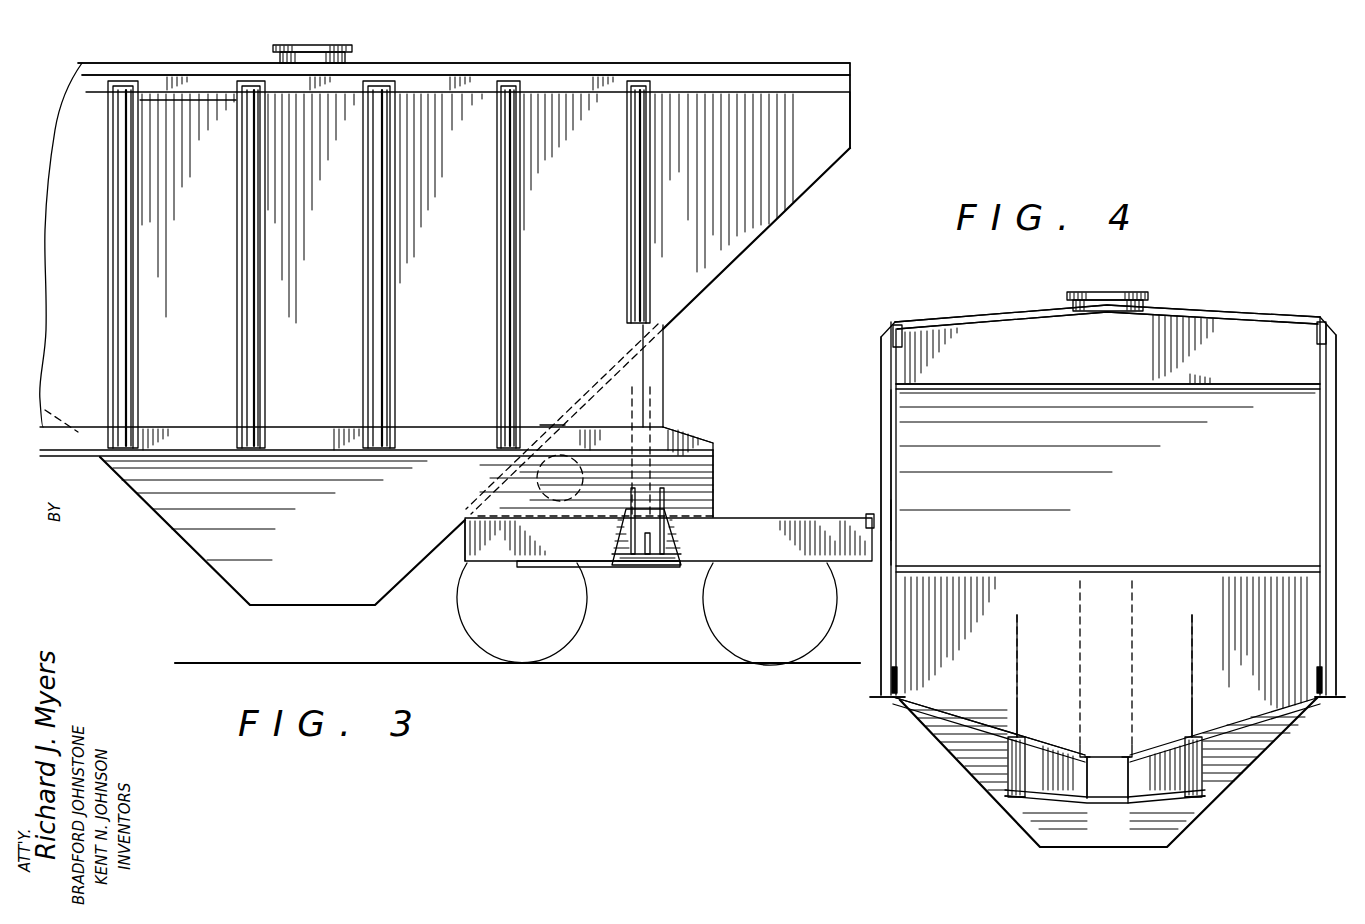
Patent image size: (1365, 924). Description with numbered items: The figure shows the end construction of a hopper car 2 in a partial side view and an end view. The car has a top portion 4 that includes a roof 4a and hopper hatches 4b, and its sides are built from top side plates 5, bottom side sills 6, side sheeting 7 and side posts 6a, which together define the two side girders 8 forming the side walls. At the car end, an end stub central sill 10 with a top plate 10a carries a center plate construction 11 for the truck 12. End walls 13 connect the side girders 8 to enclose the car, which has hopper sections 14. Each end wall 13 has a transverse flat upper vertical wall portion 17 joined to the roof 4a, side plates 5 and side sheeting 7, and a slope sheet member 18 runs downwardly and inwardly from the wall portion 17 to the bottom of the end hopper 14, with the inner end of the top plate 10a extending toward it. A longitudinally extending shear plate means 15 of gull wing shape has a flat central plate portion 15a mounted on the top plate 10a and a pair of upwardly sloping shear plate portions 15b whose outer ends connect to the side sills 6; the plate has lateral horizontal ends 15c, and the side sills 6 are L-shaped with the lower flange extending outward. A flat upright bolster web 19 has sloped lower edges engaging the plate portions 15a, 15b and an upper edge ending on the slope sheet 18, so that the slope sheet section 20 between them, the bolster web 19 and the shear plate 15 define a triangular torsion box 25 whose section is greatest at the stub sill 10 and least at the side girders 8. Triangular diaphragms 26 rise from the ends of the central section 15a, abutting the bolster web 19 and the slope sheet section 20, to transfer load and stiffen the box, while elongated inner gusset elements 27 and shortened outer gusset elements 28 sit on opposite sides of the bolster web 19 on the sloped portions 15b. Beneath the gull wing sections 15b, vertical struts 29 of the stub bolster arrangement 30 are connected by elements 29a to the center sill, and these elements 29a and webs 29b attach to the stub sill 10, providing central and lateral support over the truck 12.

In FIG. 3, the hopper car 2 is at (890, 138).
In FIG. 4, the hopper car 2 is at (1254, 296).
In FIG. 3, the top portion 4 is at (478, 66).
In FIG. 4, the top portion 4 is at (978, 318).
In FIG. 3, the roof 4a is at (640, 65).
In FIG. 4, the roof 4a is at (1195, 312).
In FIG. 3, the hopper hatches 4b is at (350, 50).
In FIG. 4, the hopper hatches 4b is at (1103, 292).
In FIG. 3, the top side plates 5 is at (484, 92).
In FIG. 4, the top side plates 5 is at (898, 322).
In FIG. 3, the bottom side sills 6 is at (685, 428).
In FIG. 4, the bottom side sills 6 is at (1330, 700).
In FIG. 4, the side posts 6a is at (884, 447).
In FIG. 3, the side sheeting 7 is at (58, 362).
In FIG. 3, the side girders 8 is at (321, 207).
In FIG. 4, the side girders 8 is at (1197, 725).
In FIG. 3, the end stub central sill 10 is at (790, 518).
In FIG. 4, the end stub central sill 10 is at (1140, 790).
In FIG. 3, the top plate of the stub center sill 10a is at (473, 505).
In FIG. 4, the top plate of the stub center sill 10a is at (1090, 795).
In FIG. 3, the center plate construction 11 is at (630, 568).
In FIG. 3, the trucks 12 is at (632, 634).
In FIG. 3, the end walls 13 is at (855, 99).
In FIG. 4, the end walls 13 is at (966, 437).
In FIG. 3, the hopper sections 14 is at (404, 578).
In FIG. 4, the hopper sections 14 is at (955, 757).
In FIG. 3, the shear plate means 15 is at (719, 496).
In FIG. 4, the shear plate means 15 is at (1244, 710).
In FIG. 4, the central plate portion 15a is at (1115, 795).
In FIG. 3, the shear plate portions 15b is at (713, 470).
In FIG. 4, the shear plate portions 15b is at (942, 712).
In FIG. 4, the lateral horizontal ends 15c is at (1332, 710).
In FIG. 3, the upper vertical wall portion 17 is at (852, 120).
In FIG. 4, the upper vertical wall portion 17 is at (1250, 362).
In FIG. 3, the slope sheet member 18 is at (812, 188).
In FIG. 4, the slope sheet member 18 is at (912, 463).
In FIG. 3, the bolster web 19 is at (665, 386).
In FIG. 4, the bolster web 19 is at (1285, 580).
In FIG. 3, the slope sheet section 20 is at (580, 398).
In FIG. 3, the torsion box 25 is at (551, 424).
In FIG. 4, the torsion box 25 is at (898, 515).
In FIG. 4, the diaphragms 26 is at (1083, 581).
In FIG. 3, the inner gusset elements 27 is at (632, 387).
In FIG. 4, the inner gusset elements 27 is at (1196, 620).
In FIG. 3, the outer gusset elements 28 is at (713, 450).
In FIG. 4, the outer gusset elements 28 is at (1018, 705).
In FIG. 3, the vertical struts 29 is at (666, 500).
In FIG. 4, the vertical struts 29 is at (1008, 765).
In FIG. 4, the connecting elements 29a is at (1015, 800).
In FIG. 4, the webs 29b is at (1170, 757).
In FIG. 3, the stub bolster arrangement 30 is at (690, 540).
In FIG. 4, the stub bolster arrangement 30 is at (1202, 806).